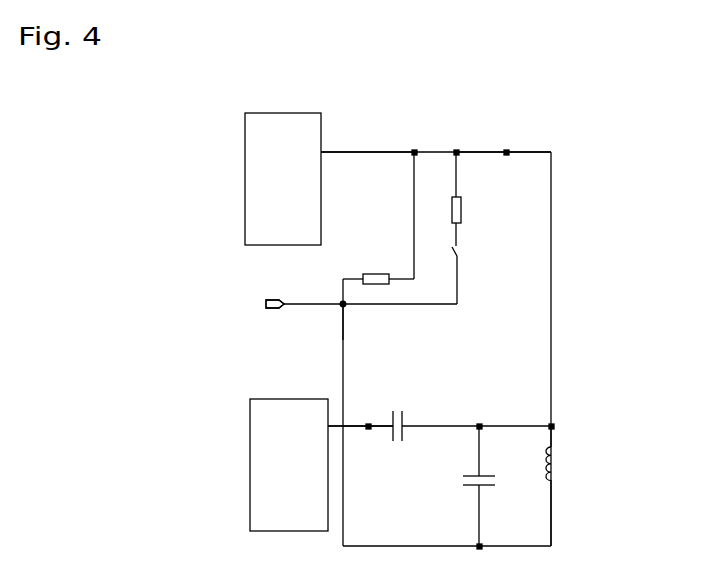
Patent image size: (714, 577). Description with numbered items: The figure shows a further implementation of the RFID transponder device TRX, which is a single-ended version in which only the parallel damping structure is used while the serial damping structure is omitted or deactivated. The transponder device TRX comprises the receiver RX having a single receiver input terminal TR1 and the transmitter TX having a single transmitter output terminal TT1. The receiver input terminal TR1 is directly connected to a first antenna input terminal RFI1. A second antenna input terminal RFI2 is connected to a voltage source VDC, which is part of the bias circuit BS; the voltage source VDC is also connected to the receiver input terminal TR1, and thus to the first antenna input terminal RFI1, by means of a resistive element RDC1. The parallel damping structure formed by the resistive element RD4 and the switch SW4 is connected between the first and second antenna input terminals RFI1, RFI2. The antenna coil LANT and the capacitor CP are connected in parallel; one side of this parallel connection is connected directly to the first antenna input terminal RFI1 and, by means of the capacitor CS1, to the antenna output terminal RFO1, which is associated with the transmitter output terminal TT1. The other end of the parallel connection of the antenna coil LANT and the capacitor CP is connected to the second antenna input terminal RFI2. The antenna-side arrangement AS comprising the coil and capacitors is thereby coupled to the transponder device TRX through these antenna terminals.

The transponder device TRX is at (402, 108).
The receiver RX is at (283, 179).
The transmitter TX is at (289, 465).
The receiver input terminal TR1 is at (322, 151).
The first antenna input terminal RFI1 is at (506, 152).
The resistive element of parallel damping structure RD4 is at (461, 197).
The switch of parallel damping structure SW4 is at (458, 252).
The resistive element RDC1 is at (380, 264).
The voltage source VDC is at (288, 289).
The bias circuit BS is at (252, 318).
The second antenna input terminal RFI2 is at (343, 304).
The transmitter output terminal TT1 is at (330, 424).
The antenna output terminal RFO1 is at (368, 424).
The capacitor CS1 is at (406, 410).
The capacitor CP is at (460, 486).
The antenna coil LANT is at (586, 452).
The antenna section AS is at (583, 506).